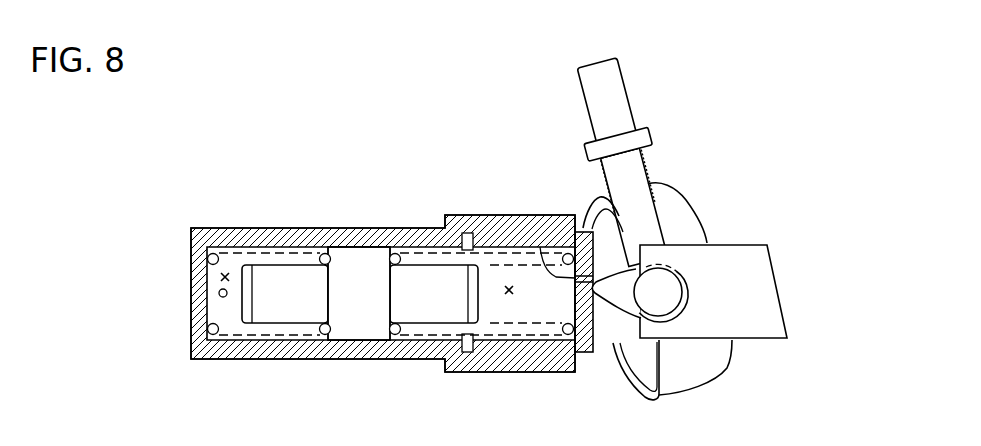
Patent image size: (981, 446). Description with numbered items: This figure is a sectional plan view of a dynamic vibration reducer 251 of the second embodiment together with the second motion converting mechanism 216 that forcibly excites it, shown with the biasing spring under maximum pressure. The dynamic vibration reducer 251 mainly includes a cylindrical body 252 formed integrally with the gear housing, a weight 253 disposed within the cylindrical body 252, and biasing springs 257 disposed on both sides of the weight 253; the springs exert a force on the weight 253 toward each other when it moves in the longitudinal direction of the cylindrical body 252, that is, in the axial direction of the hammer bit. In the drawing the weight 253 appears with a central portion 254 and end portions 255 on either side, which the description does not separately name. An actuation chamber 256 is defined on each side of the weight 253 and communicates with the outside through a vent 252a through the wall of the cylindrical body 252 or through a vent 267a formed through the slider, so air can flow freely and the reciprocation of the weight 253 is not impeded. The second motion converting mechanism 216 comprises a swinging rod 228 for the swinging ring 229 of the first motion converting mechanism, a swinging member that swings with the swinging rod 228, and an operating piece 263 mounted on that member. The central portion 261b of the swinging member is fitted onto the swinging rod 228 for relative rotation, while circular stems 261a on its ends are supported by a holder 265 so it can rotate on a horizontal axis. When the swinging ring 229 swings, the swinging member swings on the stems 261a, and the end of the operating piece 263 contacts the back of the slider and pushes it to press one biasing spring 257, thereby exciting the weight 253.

The second motion converting mechanism 216 is at (715, 265).
The swinging rod 228 is at (623, 73).
The swinging ring 229 is at (700, 222).
The dynamic vibration reducer 251 is at (290, 224).
The cylindrical body 252 is at (232, 227).
The vent 252a is at (219, 293).
The weight 253 is at (360, 336).
The piston body 254 is at (356, 247).
The piston portion 255 is at (282, 315).
The actuation chamber 256 is at (223, 276).
The biasing spring 257 is at (410, 252).
The stem 261a is at (668, 292).
The central portion 261b is at (652, 140).
The operating piece 263 is at (615, 300).
The holder 265 is at (760, 327).
The vent 267a is at (540, 247).